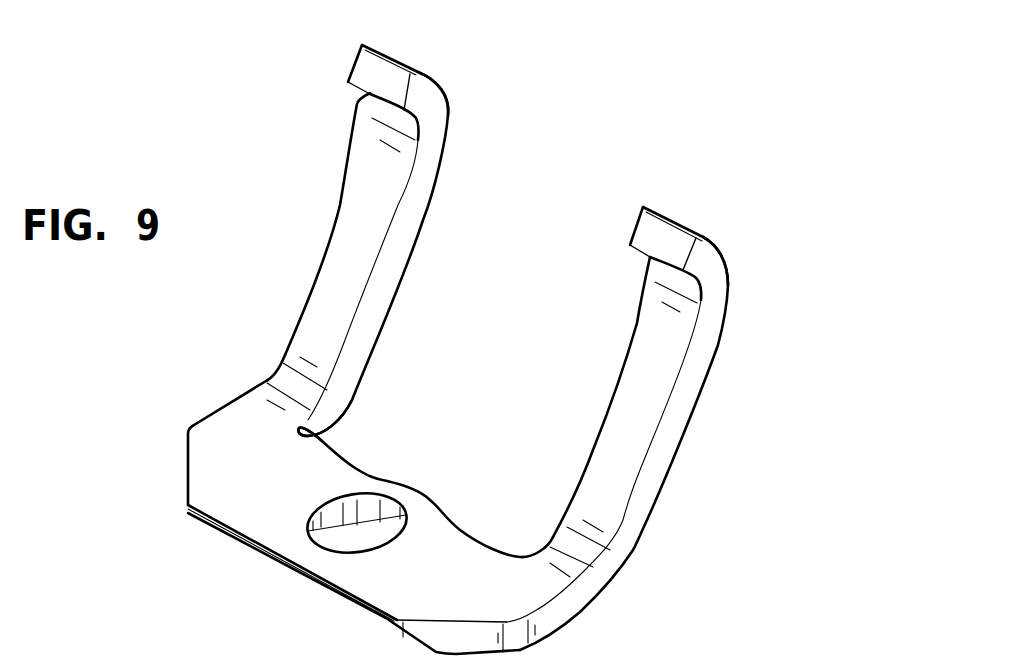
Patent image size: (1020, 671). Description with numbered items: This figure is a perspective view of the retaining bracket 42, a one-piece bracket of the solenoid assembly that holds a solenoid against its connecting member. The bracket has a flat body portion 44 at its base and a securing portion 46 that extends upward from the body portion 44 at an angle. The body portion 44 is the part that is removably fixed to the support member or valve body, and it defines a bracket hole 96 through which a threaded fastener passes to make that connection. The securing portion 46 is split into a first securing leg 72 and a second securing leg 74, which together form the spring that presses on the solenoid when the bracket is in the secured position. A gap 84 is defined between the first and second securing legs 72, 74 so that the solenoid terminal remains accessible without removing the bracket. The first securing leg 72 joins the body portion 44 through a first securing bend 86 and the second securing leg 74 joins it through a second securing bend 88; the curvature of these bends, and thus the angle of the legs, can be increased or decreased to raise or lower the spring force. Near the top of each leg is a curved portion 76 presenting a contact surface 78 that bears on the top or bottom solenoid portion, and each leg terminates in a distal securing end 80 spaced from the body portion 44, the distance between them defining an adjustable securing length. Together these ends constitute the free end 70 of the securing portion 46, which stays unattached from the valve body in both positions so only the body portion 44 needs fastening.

The retaining bracket 42 is at (864, 160).
The body portion 44 is at (168, 409).
The securing portion 46 is at (321, 125).
The free end 70 is at (757, 337).
The first securing leg 72 is at (333, 238).
The second securing leg 74 is at (639, 434).
The curved portion 76 is at (438, 107).
The contact surface 78 is at (418, 73).
The distal securing end 80 is at (366, 44).
The gap 84 is at (501, 231).
The first securing bend 86 is at (308, 390).
The second securing bend 88 is at (588, 555).
The bracket hole 96 is at (321, 528).